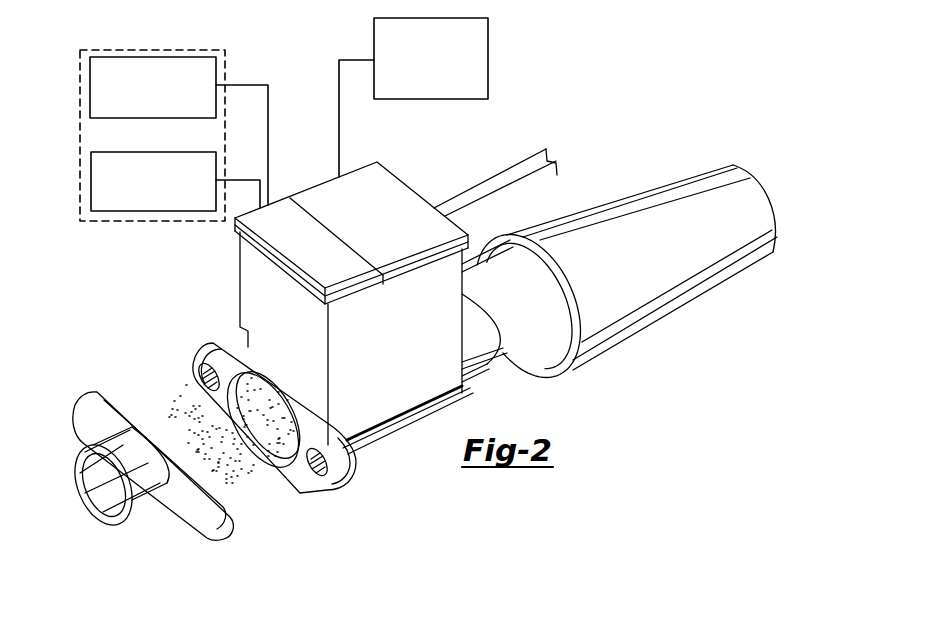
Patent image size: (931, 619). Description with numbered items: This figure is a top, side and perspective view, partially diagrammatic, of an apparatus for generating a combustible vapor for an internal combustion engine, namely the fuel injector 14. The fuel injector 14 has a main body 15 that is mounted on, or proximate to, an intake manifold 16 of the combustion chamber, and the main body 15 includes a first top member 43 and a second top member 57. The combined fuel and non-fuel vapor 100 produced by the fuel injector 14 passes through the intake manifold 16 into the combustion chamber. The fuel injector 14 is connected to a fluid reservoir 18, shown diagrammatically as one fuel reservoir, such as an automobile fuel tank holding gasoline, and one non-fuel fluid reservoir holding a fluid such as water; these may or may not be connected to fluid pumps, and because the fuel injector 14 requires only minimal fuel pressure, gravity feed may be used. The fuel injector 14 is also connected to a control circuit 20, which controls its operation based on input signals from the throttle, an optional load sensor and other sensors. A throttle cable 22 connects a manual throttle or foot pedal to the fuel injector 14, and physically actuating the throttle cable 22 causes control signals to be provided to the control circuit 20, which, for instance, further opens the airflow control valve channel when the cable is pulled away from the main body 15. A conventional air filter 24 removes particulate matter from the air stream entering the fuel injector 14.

The fuel injector 14 is at (186, 297).
The main body 15 is at (377, 395).
The intake manifold 16 is at (188, 507).
The fluid reservoir 18 is at (80, 71).
The control circuit 20 is at (488, 47).
The throttle cable 22 is at (478, 185).
The air filter 24 is at (628, 292).
The first top member 43 is at (290, 235).
The second top member 57 is at (383, 190).
The combined fuel and non-fuel vapor 100 is at (188, 395).